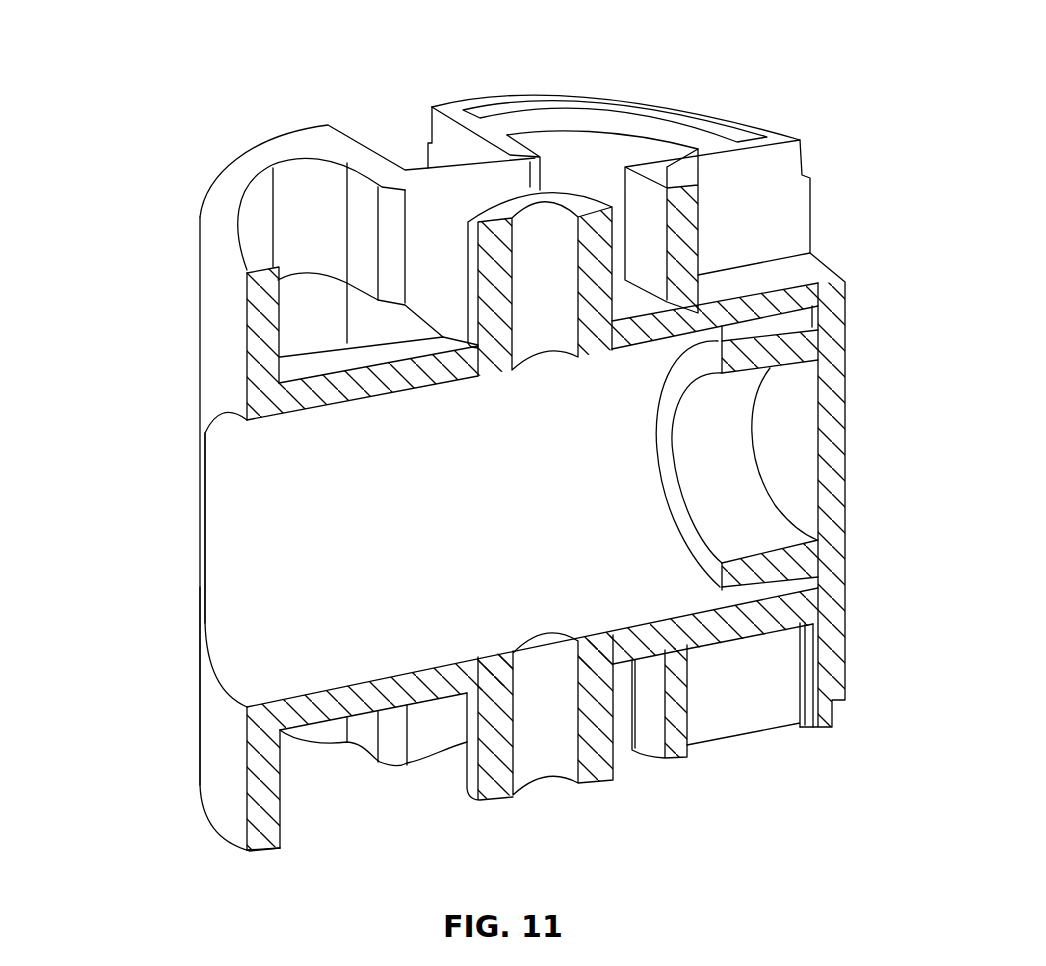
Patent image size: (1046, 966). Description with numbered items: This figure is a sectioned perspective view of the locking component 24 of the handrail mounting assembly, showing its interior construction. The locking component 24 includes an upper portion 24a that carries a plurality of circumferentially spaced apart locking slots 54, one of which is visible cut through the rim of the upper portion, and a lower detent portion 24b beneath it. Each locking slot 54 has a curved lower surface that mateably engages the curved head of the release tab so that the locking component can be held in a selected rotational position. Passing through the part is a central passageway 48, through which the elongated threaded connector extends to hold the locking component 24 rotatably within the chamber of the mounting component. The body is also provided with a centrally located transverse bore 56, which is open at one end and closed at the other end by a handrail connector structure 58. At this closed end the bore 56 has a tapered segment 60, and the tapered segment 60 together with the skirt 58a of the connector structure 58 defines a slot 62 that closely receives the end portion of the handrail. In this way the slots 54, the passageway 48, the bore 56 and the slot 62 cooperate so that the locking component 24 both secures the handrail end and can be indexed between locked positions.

The locking component 24 is at (138, 289).
The upper portion 24a is at (810, 193).
The lower detent portion 24b is at (222, 776).
The central passageway 48 is at (546, 318).
The locking slots 54 is at (409, 150).
The transverse bore 56 is at (412, 542).
The handrail connector structure 58 is at (662, 455).
The skirt 58a is at (785, 558).
The tapered segment 60 is at (792, 302).
The slot 62 is at (722, 328).